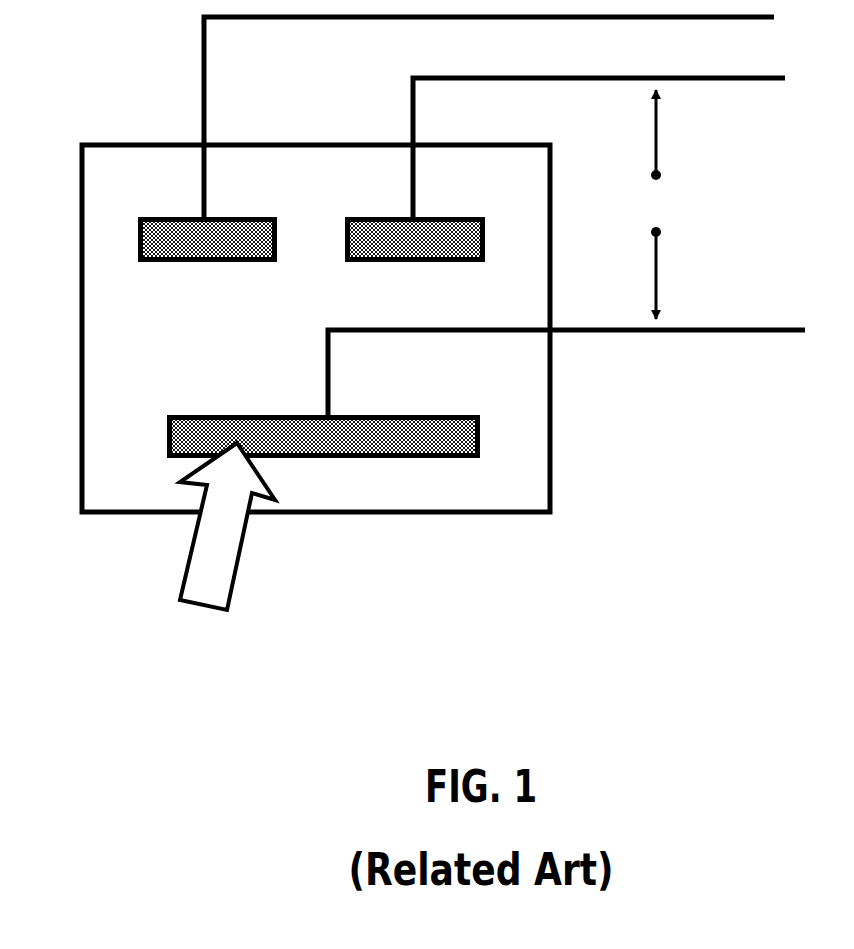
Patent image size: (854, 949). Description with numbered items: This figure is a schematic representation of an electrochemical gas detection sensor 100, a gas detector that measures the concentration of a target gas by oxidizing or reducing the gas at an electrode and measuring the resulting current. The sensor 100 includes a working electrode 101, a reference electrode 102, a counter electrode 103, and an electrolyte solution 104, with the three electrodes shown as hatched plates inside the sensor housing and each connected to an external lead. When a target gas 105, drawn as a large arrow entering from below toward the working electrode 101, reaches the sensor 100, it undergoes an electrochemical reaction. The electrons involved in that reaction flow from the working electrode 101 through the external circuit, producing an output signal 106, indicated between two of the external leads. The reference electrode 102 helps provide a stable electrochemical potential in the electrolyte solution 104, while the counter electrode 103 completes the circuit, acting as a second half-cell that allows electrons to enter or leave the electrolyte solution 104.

The electrochemical gas detection sensor 100 is at (128, 119).
The working electrode 101 is at (370, 458).
The reference electrode 102 is at (413, 263).
The counter electrode 103 is at (210, 263).
The electrolyte solution 104 is at (279, 374).
The target gas 105 is at (187, 566).
The output signal 106 is at (658, 204).